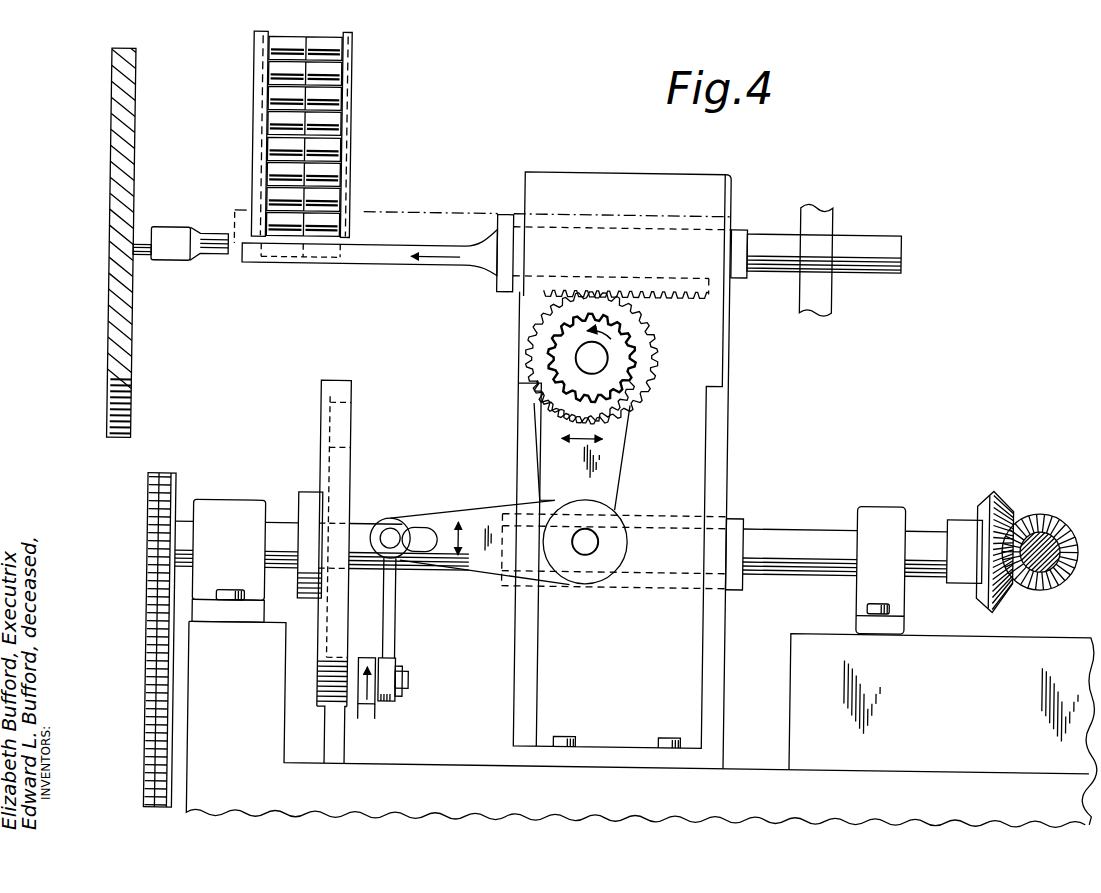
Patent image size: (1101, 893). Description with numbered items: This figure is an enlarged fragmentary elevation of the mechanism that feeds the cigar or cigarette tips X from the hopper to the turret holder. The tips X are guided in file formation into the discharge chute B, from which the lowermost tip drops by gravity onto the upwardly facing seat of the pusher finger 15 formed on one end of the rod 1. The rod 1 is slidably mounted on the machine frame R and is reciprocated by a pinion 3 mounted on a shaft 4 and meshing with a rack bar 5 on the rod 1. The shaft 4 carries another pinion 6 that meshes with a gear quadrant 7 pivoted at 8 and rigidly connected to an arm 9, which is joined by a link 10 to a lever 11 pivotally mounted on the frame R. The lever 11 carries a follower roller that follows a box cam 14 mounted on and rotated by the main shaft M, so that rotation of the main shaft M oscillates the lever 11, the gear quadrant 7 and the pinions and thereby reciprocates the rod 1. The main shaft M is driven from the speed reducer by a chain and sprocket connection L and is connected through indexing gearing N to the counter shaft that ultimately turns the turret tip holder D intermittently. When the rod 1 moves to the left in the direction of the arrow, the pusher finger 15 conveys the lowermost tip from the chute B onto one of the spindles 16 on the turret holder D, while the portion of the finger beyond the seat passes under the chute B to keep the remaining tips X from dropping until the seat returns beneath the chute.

The rod 1 is at (496, 232).
The pinion 3 is at (521, 347).
The shaft 4 is at (584, 359).
The rack bar 5 is at (95, 250).
The pinion 6 is at (617, 358).
The gear quadrant 7 is at (547, 411).
The pivot 8 is at (592, 538).
The arm 9 is at (483, 519).
The link 10 is at (409, 540).
The lever 11 is at (376, 707).
The box cam 14 is at (349, 396).
The pusher finger 15 is at (362, 265).
The spindle 16 is at (140, 241).
The discharge chute B is at (350, 98).
The cigar or cigarette tips X is at (316, 204).
The turret cigarette tip holder D is at (103, 177).
The chain and sprocket connection L is at (148, 631).
The main shaft M is at (780, 536).
The indexing gearing N is at (990, 483).
The machine frame R is at (505, 760).